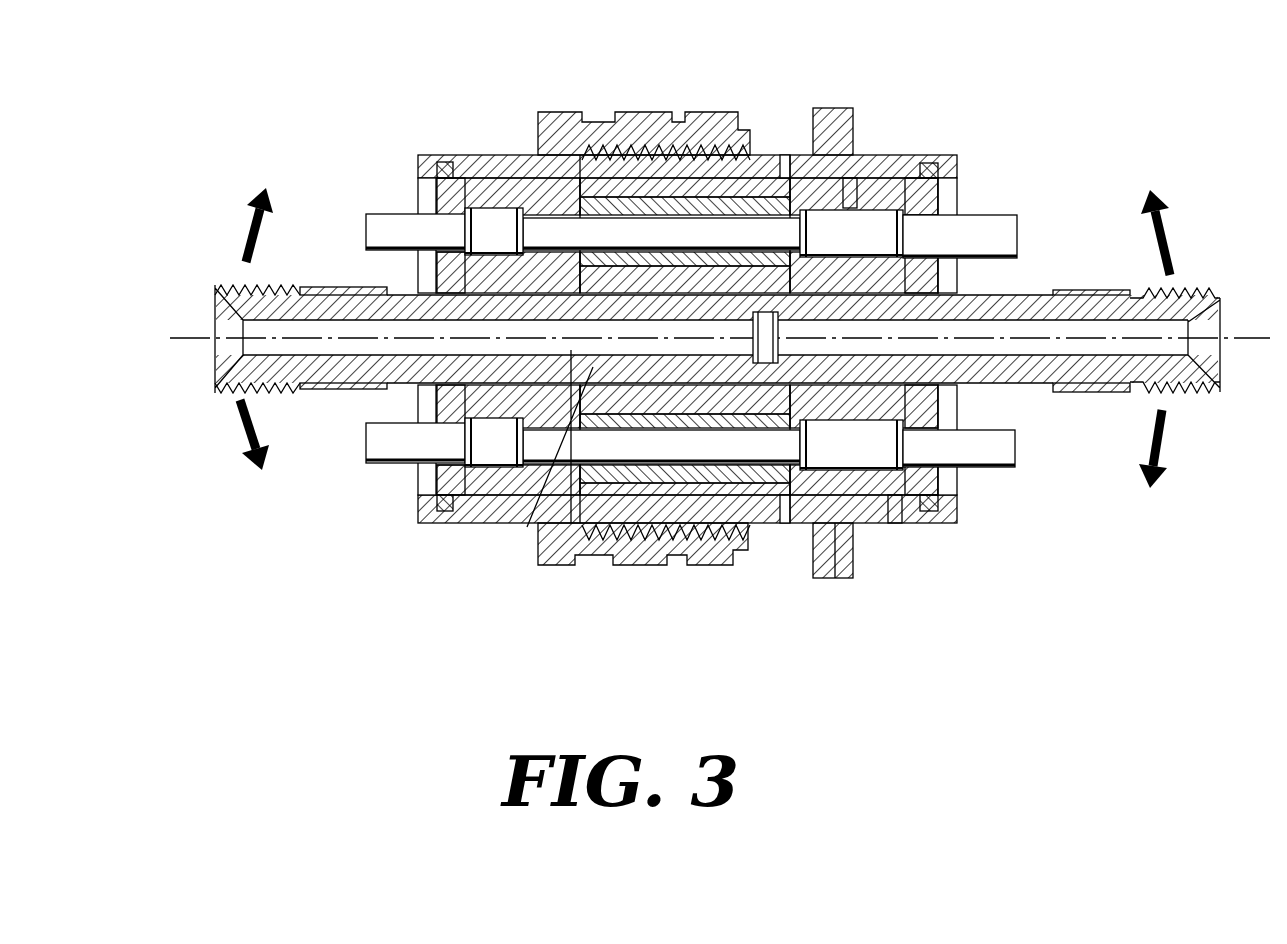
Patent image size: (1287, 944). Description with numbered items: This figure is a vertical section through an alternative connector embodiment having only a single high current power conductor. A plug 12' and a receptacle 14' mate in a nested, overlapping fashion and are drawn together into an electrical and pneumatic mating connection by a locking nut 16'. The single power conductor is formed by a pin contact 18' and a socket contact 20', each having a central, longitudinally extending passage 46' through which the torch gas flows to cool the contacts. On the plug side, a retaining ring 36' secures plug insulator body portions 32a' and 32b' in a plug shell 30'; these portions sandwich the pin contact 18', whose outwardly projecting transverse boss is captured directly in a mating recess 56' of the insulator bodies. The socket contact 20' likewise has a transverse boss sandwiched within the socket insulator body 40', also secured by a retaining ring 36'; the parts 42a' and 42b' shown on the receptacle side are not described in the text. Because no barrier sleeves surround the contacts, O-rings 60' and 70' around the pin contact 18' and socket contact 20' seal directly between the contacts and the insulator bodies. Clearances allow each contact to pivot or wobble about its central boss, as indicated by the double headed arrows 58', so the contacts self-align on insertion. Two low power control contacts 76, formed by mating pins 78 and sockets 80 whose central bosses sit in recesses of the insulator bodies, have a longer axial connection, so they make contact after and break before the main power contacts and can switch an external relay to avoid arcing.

The plug 12' is at (687, 298).
The receptacle 14' is at (759, 276).
The locking nut 16' is at (644, 311).
The pin contact 18' is at (340, 355).
The socket contact 20' is at (717, 319).
The plug shell 30' is at (672, 141).
The plug insulator body portion 32a' is at (385, 231).
The plug insulator body portion 32b' is at (472, 489).
The retaining ring 36' is at (686, 335).
The socket insulator body 40' is at (885, 197).
The bearing block 42a' is at (972, 440).
The flange 42b' is at (829, 578).
The central passage 46' is at (682, 321).
The mating recess 56' is at (497, 278).
The double headed arrows 58' is at (692, 338).
The O-ring 60' is at (558, 484).
The O-ring 70' is at (851, 340).
The low power control contacts 76 is at (694, 342).
The pins 78 is at (547, 371).
The sockets 80 is at (897, 349).